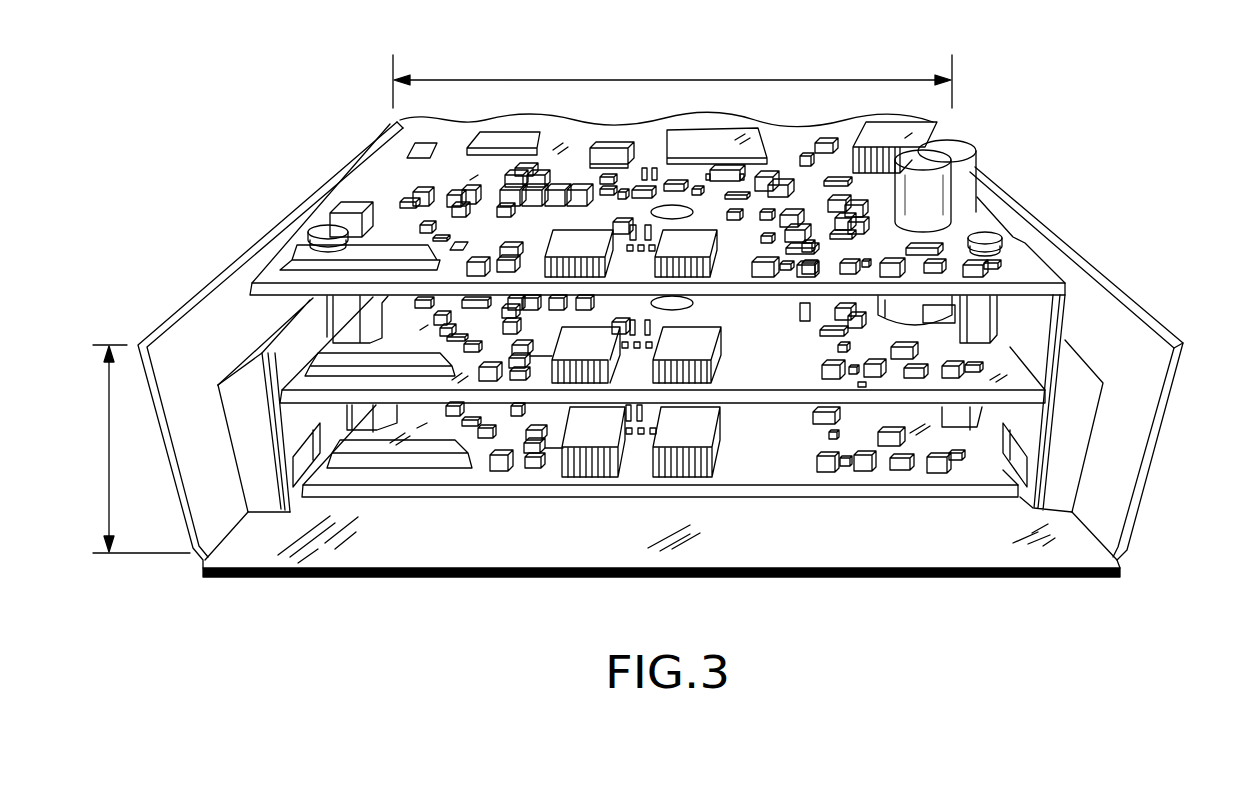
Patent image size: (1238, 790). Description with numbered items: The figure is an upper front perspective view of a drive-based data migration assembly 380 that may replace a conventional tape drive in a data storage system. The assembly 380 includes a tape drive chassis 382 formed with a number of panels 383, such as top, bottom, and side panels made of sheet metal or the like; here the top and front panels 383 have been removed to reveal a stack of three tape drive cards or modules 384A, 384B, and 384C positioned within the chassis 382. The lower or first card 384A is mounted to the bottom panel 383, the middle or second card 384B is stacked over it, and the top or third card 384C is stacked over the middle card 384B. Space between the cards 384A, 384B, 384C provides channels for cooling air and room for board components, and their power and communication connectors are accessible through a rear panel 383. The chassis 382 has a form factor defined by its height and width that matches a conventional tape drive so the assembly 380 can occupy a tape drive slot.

The drive-based data migration assembly 380 is at (217, 184).
The tape drive chassis 382 is at (1098, 255).
The panels 383 is at (244, 512).
The lower or bottom tape drive card 384A is at (1012, 507).
The middle or second tape drive card 384B is at (1030, 397).
The top or third tape drive card 384C is at (1053, 267).